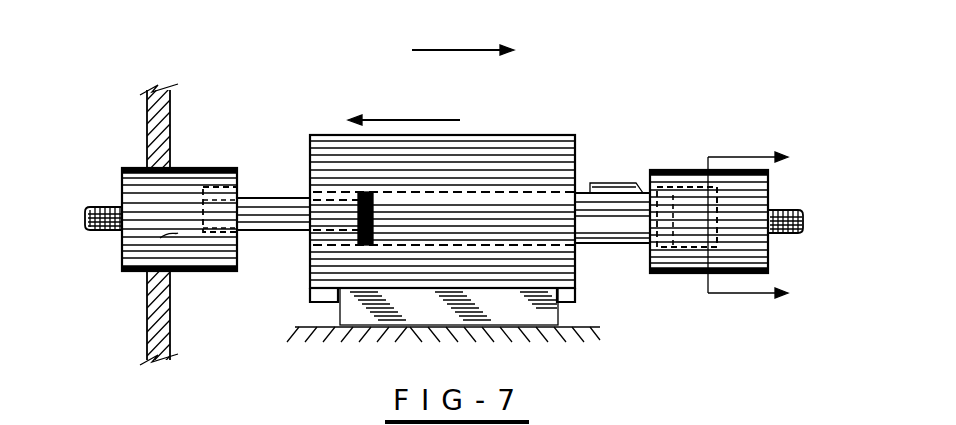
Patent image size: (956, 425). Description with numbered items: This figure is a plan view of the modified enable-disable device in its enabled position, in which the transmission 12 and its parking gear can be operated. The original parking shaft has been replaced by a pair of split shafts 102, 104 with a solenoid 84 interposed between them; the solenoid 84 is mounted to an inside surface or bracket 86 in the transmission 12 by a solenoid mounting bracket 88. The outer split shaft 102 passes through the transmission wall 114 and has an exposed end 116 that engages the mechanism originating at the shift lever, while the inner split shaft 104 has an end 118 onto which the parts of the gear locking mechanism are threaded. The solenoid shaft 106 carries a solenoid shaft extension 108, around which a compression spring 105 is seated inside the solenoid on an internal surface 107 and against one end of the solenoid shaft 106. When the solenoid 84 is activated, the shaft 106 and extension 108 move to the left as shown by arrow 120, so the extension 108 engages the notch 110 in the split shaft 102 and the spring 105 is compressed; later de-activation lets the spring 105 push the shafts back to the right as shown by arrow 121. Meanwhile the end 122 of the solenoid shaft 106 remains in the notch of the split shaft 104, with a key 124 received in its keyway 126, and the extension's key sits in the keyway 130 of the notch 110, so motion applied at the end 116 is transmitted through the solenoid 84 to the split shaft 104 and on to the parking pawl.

The solenoid 84 is at (390, 87).
The inside surface or bracket 86 is at (583, 325).
The solenoid mounting bracket 88 is at (512, 310).
The split shaft 102 is at (155, 262).
The split shaft 104 is at (677, 270).
The compression spring 105 is at (363, 193).
The solenoid shaft 106 is at (625, 212).
The internal surface 107 is at (358, 215).
The solenoid shaft extension 108 is at (265, 198).
The notch 110 is at (160, 238).
The transmission wall 114 is at (147, 125).
The exposed end 116 is at (95, 207).
The end 118 is at (793, 197).
The arrow 120 is at (418, 120).
The arrow 121 is at (467, 50).
The end 122 is at (675, 196).
The protuberance or key 124 is at (612, 186).
The keyway 126 is at (716, 192).
The keyway 130 is at (202, 188).
The transmission 12 is at (767, 225).